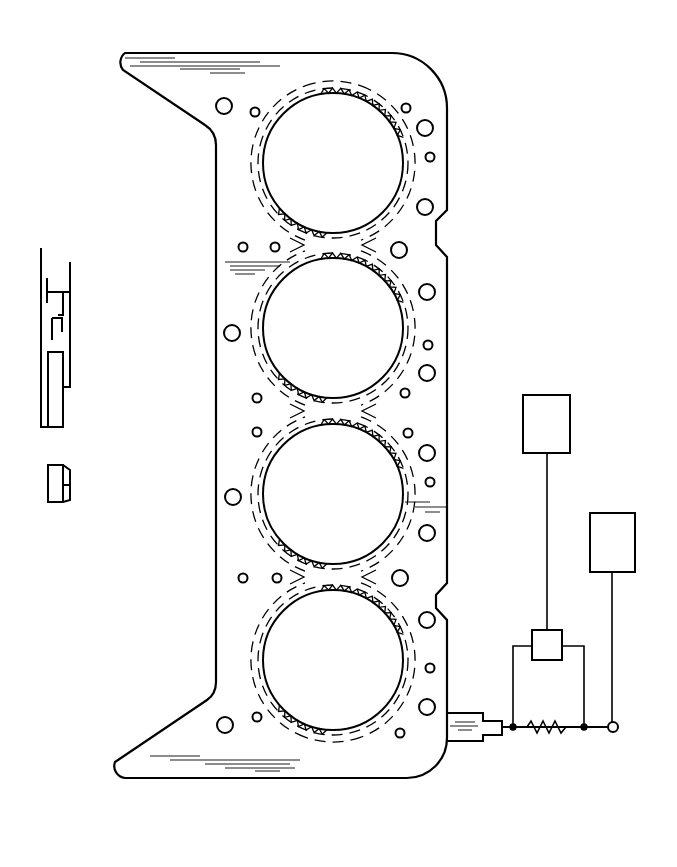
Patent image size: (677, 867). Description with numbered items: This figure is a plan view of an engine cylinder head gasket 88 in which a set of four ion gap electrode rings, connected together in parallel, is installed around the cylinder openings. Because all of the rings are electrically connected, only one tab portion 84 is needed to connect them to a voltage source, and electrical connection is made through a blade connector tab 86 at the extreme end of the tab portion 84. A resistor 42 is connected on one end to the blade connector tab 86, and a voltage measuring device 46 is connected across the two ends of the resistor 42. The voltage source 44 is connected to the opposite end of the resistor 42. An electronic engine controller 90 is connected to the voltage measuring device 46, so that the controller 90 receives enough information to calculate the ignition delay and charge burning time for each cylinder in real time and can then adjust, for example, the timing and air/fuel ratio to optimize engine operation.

The cylinder head gasket 88 is at (440, 73).
The tab portion 84 is at (460, 742).
The blade connector tab 86 is at (495, 742).
The resistor 42 is at (560, 733).
The voltage measuring device 46 is at (532, 636).
The electronic engine controller 90 is at (547, 395).
The voltage source 44 is at (622, 513).